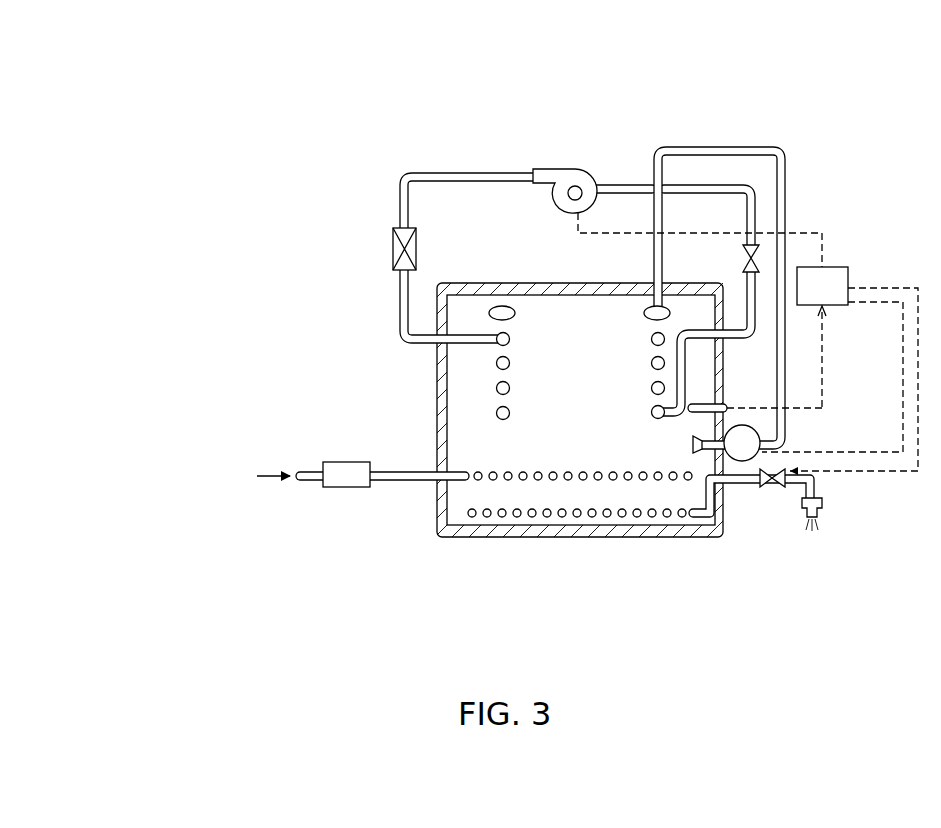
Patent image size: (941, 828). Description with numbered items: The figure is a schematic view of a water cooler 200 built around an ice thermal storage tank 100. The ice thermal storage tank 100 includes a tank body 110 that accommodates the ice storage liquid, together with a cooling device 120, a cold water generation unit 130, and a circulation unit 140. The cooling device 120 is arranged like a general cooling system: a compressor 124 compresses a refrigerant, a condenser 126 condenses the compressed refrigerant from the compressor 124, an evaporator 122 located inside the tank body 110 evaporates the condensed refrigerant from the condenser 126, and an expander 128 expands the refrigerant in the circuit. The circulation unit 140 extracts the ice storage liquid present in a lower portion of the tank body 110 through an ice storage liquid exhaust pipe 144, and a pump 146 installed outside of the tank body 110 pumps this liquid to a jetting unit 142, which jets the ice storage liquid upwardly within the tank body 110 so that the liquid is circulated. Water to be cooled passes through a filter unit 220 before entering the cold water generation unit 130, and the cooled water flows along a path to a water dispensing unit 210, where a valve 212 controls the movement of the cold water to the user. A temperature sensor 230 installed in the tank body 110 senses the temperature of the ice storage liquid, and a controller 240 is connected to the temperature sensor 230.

The water cooler 200 is at (384, 46).
The ice thermal storage tank 100 is at (494, 452).
The tank body 110 is at (673, 533).
The cooling device 120 is at (484, 163).
The evaporator 122 is at (496, 364).
The compressor 124 is at (578, 170).
The condenser 126 is at (392, 248).
The expander 128 is at (757, 257).
The cold water generation unit 130 is at (500, 515).
The circulation unit 140 is at (781, 134).
The jetting unit 142 is at (645, 313).
The ice storage liquid exhaust pipe 144 is at (703, 438).
The pump 146 is at (745, 432).
The water dispensing unit 210 is at (823, 504).
The valve 212 is at (773, 488).
The filter unit 220 is at (348, 488).
The temperature sensor 230 is at (703, 403).
The controller 240 is at (850, 280).